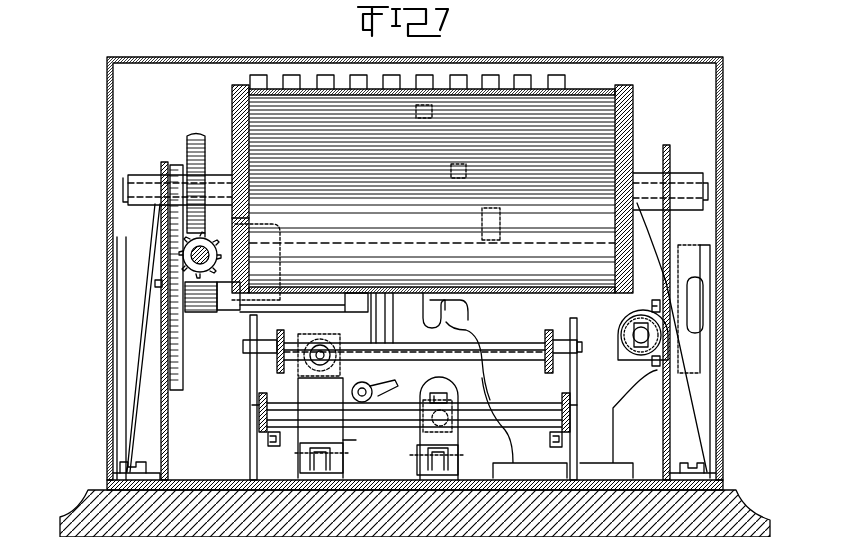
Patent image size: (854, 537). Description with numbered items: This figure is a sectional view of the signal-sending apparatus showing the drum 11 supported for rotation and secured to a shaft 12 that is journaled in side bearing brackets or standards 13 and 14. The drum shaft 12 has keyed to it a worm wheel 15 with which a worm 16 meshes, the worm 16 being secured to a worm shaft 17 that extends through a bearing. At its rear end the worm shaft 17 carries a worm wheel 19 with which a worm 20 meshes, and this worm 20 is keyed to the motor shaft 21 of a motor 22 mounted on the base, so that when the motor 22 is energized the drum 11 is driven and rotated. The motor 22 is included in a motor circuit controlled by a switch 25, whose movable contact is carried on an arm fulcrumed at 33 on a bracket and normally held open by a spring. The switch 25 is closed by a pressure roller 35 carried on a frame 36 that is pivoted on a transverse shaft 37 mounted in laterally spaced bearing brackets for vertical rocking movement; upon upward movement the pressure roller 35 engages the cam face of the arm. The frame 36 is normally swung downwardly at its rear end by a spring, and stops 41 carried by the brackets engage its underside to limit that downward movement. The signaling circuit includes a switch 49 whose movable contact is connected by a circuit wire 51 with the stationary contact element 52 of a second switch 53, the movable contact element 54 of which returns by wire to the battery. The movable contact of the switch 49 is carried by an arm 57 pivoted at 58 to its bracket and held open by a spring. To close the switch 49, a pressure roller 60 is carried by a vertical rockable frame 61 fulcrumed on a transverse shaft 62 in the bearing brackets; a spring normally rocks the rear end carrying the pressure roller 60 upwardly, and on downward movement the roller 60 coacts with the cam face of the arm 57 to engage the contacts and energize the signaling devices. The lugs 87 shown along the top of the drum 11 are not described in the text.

The drum 11 is at (432, 189).
The shaft 12 is at (709, 190).
The side bearing bracket 13 is at (161, 166).
The side bearing bracket 14 is at (669, 148).
The worm wheel 15 is at (193, 135).
The worm 16 is at (218, 250).
The worm shaft 17 is at (162, 300).
The worm wheel 19 is at (249, 224).
The worm 20 is at (208, 314).
The motor shaft 21 is at (326, 298).
The motor 22 is at (618, 424).
The switch 25 is at (460, 449).
The pivot 33 is at (415, 458).
The pressure roller 35 is at (456, 398).
The frame 36 is at (258, 402).
The transverse shaft 37 is at (545, 414).
The stops 41 is at (268, 440).
The switch 49 is at (366, 440).
The circuit wire 51 is at (374, 398).
The stationary contact element 52 is at (645, 318).
The switch 53 is at (628, 330).
The movable contact element 54 is at (633, 340).
The arm 57 is at (320, 428).
The pivot 58 is at (348, 461).
The pressure roller 60 is at (345, 352).
The rockable frame 61 is at (276, 358).
The transverse shaft 62 is at (490, 347).
The lug 87 is at (250, 80).